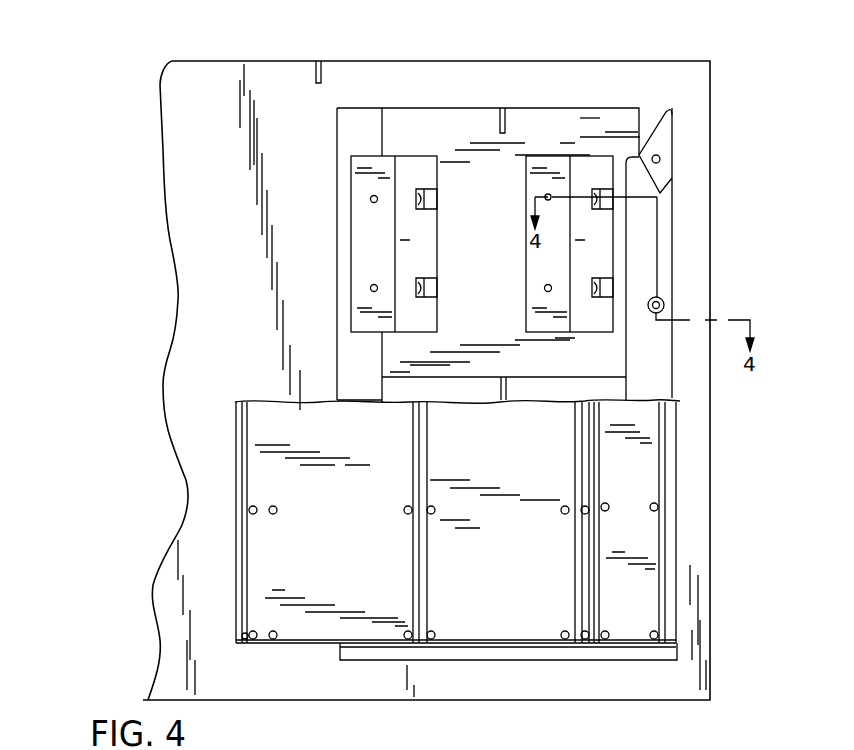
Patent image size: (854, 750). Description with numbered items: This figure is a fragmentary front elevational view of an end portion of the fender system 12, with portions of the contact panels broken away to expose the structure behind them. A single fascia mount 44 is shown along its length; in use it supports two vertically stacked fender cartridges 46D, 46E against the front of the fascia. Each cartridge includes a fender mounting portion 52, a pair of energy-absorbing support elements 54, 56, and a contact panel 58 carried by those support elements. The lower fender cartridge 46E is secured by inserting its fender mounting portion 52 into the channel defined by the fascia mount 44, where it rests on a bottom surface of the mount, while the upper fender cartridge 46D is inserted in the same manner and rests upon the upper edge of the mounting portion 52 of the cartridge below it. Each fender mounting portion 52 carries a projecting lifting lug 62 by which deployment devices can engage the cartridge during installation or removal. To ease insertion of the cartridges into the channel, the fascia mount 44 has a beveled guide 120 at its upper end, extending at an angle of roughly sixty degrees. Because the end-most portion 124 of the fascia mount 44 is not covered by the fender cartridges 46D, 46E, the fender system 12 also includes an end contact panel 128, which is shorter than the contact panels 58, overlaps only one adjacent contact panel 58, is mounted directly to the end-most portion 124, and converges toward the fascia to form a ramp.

The fender system 12 is at (113, 82).
The fascia mount 44 is at (342, 118).
The fender cartridge 46D is at (588, 114).
The fender cartridge 46E is at (393, 386).
The fender mounting portion 52 is at (445, 118).
The energy-absorbing support element 54 is at (557, 162).
The energy-absorbing support element 56 is at (412, 155).
The contact panel 58 is at (352, 520).
The lifting lug 62 is at (508, 108).
The beveled guide 120 is at (658, 115).
The end-most portion 124 is at (673, 267).
The end contact panel 128 is at (674, 633).